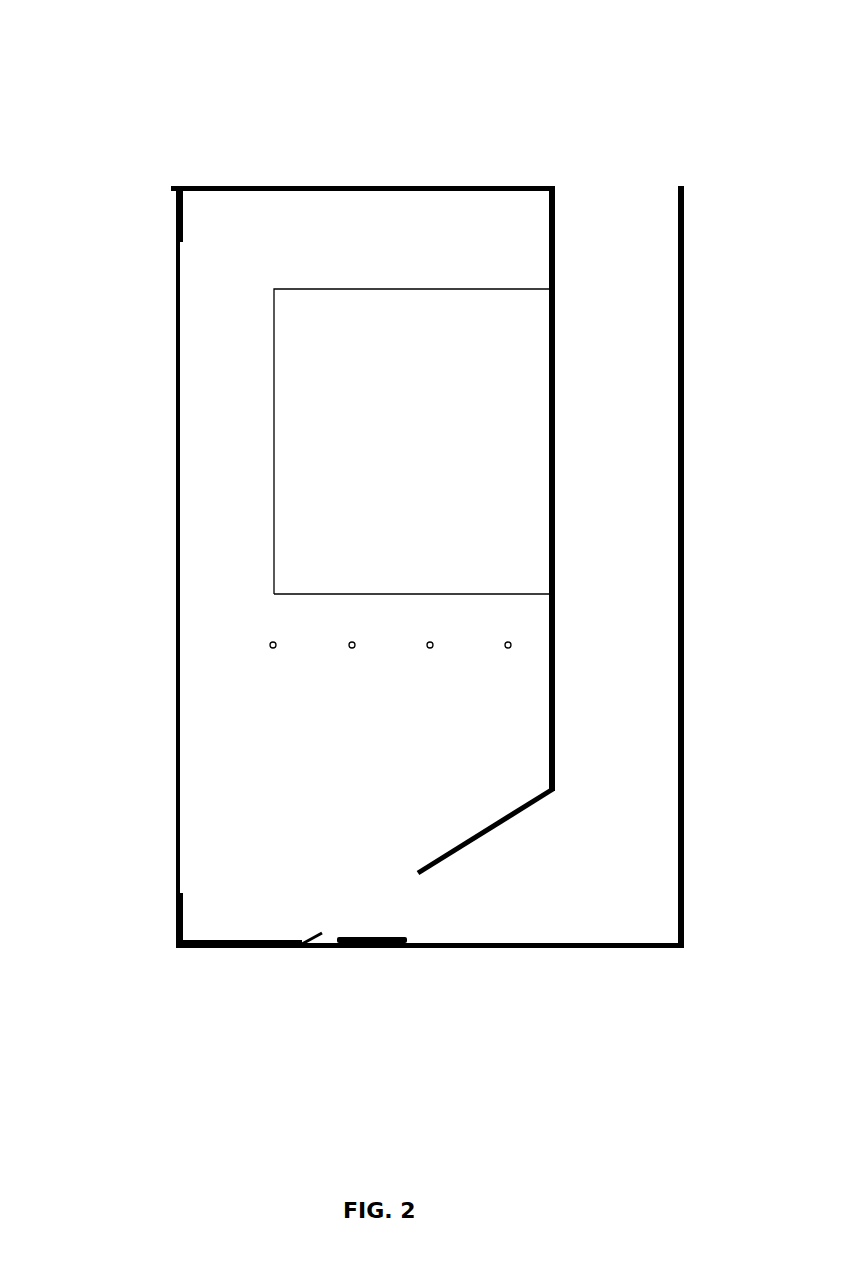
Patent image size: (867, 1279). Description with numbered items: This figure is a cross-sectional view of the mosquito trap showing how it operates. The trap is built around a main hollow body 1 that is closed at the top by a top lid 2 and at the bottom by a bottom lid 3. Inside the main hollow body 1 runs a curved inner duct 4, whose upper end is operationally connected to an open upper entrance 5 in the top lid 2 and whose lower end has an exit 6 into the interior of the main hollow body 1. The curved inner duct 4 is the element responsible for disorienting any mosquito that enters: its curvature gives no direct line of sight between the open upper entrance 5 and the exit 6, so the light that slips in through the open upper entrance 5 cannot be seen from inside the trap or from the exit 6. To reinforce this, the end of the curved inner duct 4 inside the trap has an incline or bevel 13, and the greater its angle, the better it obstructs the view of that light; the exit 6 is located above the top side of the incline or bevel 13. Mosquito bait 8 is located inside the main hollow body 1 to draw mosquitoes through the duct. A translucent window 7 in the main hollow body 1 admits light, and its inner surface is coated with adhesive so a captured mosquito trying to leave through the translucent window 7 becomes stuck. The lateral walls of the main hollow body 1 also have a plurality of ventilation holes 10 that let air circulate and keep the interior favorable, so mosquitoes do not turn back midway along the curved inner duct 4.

The main hollow body 1 is at (215, 378).
The top lid 2 is at (253, 185).
The bottom lid 3 is at (500, 947).
The curved inner duct 4 is at (550, 247).
The open upper entrance 5 is at (630, 225).
The exit 6 is at (367, 888).
The translucent window 7 is at (368, 375).
The mosquito bait 8 is at (348, 935).
The ventilation holes 10 is at (270, 648).
The incline or bevel 13 is at (467, 837).